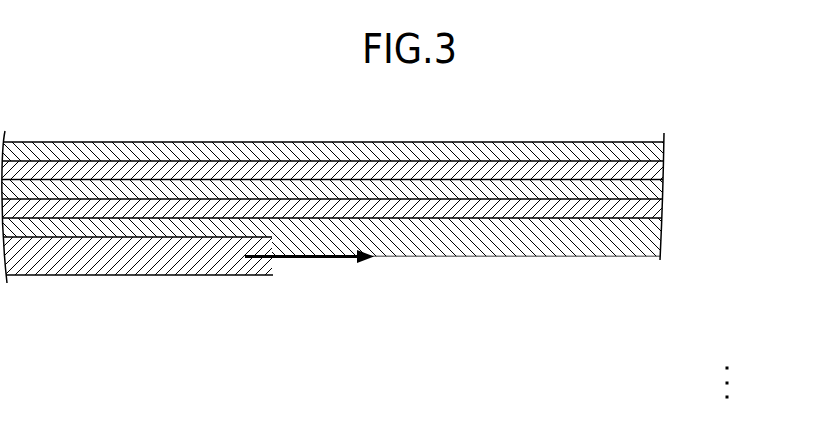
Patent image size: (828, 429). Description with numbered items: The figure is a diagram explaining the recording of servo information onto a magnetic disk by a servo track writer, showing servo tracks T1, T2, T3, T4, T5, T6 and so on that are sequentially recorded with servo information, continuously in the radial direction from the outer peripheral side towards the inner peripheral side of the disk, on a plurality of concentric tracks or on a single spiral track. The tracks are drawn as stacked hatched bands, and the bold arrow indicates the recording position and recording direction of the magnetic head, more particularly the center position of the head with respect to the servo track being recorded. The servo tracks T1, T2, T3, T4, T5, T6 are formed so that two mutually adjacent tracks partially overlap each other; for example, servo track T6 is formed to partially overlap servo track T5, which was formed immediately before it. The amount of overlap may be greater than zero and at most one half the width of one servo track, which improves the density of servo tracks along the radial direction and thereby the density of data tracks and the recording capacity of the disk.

The servo track T1 is at (664, 150).
The servo track T2 is at (653, 170).
The servo track T3 is at (653, 188).
The servo track T4 is at (653, 210).
The servo track T5 is at (653, 237).
The servo track T6 is at (369, 297).